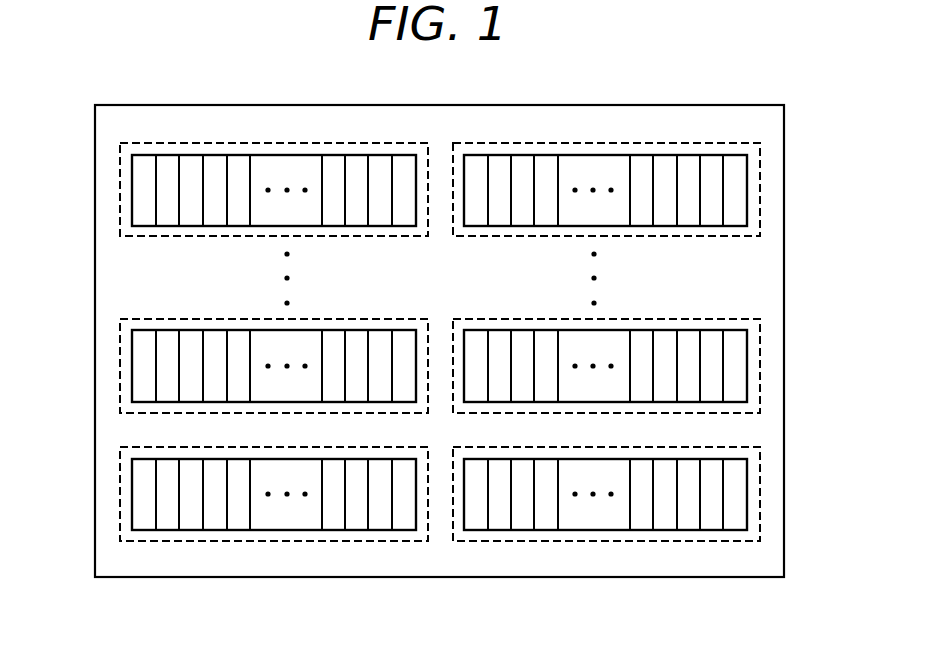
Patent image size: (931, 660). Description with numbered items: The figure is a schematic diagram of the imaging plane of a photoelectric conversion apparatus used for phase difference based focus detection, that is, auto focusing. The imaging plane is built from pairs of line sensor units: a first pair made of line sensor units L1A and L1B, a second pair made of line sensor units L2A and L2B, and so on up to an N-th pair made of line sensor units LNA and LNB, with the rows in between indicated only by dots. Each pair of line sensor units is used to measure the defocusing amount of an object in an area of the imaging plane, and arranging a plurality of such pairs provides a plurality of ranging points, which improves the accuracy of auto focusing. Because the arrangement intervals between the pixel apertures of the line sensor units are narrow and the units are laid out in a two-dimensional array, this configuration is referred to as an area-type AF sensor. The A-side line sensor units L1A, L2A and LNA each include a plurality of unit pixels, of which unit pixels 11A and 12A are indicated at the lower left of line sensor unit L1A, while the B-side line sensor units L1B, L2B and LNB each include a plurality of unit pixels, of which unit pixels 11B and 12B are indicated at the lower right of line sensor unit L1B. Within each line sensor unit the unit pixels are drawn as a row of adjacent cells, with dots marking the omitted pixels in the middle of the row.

The line sensor unit LNA is at (120, 190).
The line sensor unit LNB is at (760, 188).
The line sensor unit L2A is at (120, 367).
The line sensor unit L2B is at (760, 364).
The line sensor unit L1A is at (120, 495).
The line sensor unit L1B is at (760, 492).
The unit pixel 11A is at (143, 524).
The unit pixel 12A is at (170, 524).
The unit pixel 12B is at (710, 524).
The unit pixel 11B is at (738, 524).